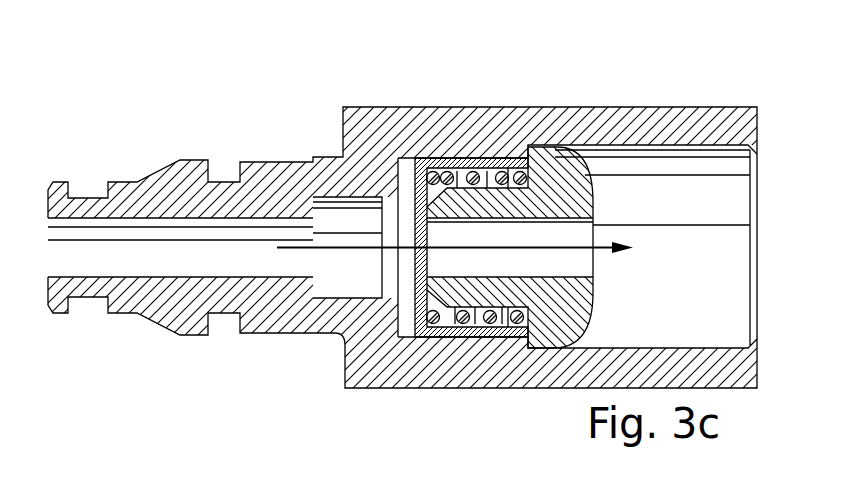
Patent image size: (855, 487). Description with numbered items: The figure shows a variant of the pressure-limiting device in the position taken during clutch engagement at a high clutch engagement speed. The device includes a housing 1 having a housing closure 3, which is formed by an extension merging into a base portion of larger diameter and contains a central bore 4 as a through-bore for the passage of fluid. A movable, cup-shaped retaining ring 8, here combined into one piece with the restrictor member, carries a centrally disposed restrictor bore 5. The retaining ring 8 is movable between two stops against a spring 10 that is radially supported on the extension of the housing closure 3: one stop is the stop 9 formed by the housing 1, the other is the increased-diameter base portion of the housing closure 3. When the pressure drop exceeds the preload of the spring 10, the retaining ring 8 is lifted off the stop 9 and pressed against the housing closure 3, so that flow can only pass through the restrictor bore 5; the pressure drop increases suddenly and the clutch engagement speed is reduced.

The housing 1 is at (300, 172).
The housing closure 3 is at (552, 173).
The central bore 4 is at (580, 262).
The restrictor bore 5 is at (335, 250).
The retaining ring 8 is at (437, 167).
The stop 9 is at (405, 337).
The spring 10 is at (500, 168).